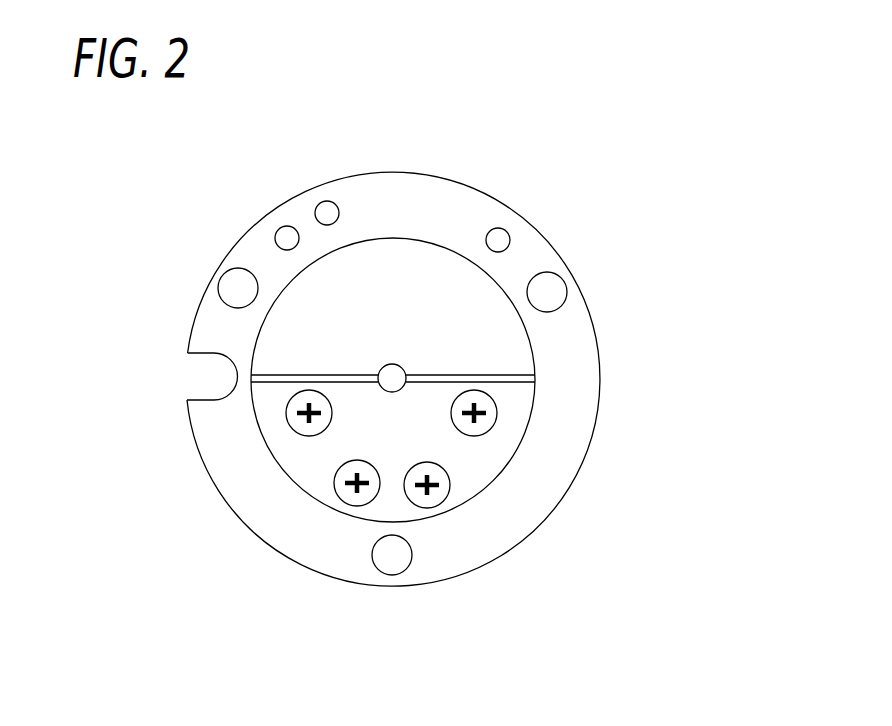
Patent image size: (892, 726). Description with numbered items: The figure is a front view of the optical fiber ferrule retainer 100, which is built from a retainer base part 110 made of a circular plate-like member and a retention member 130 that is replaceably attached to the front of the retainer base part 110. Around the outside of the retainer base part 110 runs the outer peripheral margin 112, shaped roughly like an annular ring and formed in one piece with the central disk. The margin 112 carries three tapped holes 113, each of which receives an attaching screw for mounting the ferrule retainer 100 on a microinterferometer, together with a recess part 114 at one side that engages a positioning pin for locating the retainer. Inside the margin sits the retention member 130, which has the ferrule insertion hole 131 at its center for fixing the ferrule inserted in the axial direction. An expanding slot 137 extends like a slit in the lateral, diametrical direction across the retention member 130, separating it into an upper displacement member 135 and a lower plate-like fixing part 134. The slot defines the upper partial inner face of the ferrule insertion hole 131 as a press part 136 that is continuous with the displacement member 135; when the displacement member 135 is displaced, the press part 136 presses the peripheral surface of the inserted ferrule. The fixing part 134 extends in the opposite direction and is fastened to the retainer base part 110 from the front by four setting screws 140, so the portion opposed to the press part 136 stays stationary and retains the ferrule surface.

The ferrule retainer 100 is at (278, 172).
The retainer base part 110 is at (497, 187).
The outer peripheral margin 112 is at (313, 552).
The tapped holes 113 is at (235, 285).
The recess part 114 is at (210, 399).
The retention member 130 is at (404, 228).
The ferrule insertion hole 131 is at (405, 367).
The fixing part 134 is at (265, 418).
The displacement member 135 is at (489, 288).
The press part 136 is at (389, 368).
The expanding slot 137 is at (372, 377).
The setting screws 140 is at (348, 468).